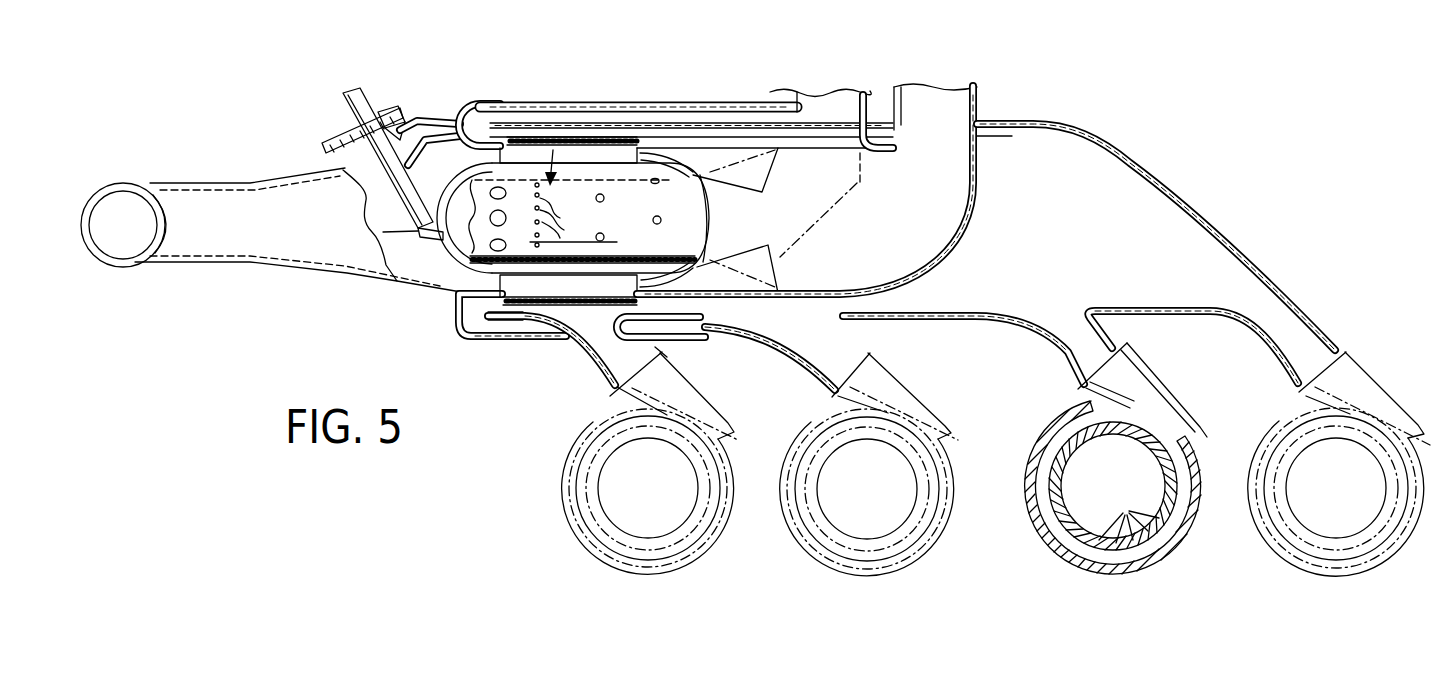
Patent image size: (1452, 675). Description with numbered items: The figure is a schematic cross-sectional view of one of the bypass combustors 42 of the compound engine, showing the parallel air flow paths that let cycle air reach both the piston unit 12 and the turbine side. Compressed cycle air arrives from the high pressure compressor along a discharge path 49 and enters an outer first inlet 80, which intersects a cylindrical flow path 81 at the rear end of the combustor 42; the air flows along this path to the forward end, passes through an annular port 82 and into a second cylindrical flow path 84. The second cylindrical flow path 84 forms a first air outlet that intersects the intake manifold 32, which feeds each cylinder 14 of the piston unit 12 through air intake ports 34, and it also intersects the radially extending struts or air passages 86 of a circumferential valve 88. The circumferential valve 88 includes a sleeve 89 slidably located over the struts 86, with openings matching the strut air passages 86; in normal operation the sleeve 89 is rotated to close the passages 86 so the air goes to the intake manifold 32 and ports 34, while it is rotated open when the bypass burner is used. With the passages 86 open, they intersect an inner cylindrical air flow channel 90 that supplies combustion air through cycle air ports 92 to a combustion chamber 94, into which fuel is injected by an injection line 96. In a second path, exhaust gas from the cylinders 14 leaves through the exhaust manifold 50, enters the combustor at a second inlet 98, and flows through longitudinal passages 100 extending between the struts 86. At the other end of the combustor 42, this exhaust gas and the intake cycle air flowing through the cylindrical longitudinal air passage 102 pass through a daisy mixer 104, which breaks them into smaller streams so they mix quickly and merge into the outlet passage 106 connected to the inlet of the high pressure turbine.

The piston unit 12 is at (565, 540).
The cylinder 14 is at (660, 497).
The intake manifold 32 is at (612, 362).
The air intake port 34 is at (1148, 526).
The combustor 42 is at (350, 342).
The discharge path 49 is at (795, 92).
The exhaust manifold 50 is at (97, 262).
The outer first inlet 80 is at (830, 103).
The cylindrical flow path 81 is at (720, 106).
The annular port 82 is at (472, 127).
The second cylindrical flow path 84 is at (580, 145).
The strut air passage 86 is at (606, 158).
The circumferential valve 88 is at (655, 138).
The sleeve 89 is at (553, 150).
The inner cylindrical air flow channel 90 is at (497, 165).
The cycle air port 92 is at (574, 250).
The combustion chamber 94 is at (457, 237).
The injection line 96 is at (365, 97).
The second inlet 98 is at (387, 254).
The longitudinal passage 100 is at (702, 262).
The cylindrical longitudinal air passage 102 is at (614, 171).
The daisy mixer 104 is at (750, 258).
The outlet passage 106 is at (940, 112).